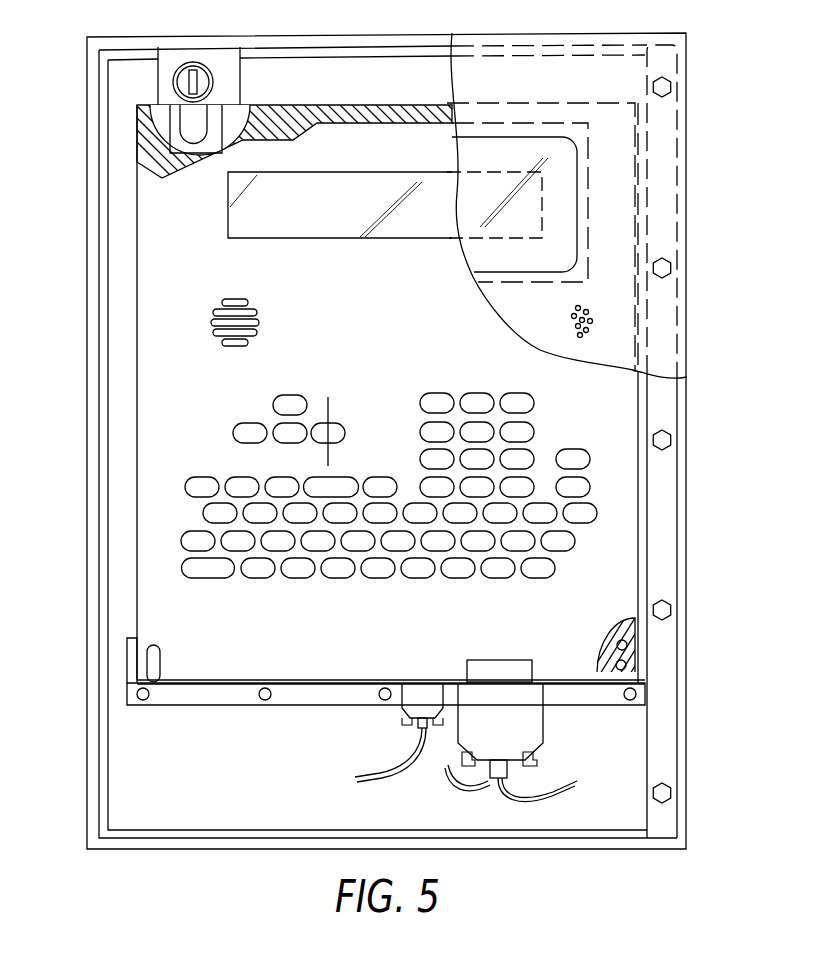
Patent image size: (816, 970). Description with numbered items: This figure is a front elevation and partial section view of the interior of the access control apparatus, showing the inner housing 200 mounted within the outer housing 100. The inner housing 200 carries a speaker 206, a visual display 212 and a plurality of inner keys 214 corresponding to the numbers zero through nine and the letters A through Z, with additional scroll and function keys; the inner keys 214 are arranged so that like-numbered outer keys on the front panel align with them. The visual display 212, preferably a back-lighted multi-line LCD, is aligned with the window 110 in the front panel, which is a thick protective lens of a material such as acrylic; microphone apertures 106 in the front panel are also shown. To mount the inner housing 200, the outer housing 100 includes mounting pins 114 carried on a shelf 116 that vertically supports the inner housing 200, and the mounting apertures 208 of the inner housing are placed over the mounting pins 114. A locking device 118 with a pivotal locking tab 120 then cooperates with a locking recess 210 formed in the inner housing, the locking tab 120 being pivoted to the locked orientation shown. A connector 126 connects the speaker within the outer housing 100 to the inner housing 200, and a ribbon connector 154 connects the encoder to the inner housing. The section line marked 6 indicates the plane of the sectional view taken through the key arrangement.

The outer housing 100 is at (686, 197).
The microphone apertures 106 is at (569, 305).
The window 110 is at (577, 205).
The mounting pins 114 is at (622, 665).
The shelf 116 is at (349, 693).
The locking device 118 is at (167, 70).
The pivotal locking tab 120 is at (188, 128).
The connector 126 is at (538, 726).
The ribbon connector 154 is at (387, 773).
The inner housing 200 is at (202, 391).
The speaker 206 is at (262, 323).
The mounting apertures 208 is at (622, 647).
The locking recess 210 is at (215, 148).
The visual display 212 is at (262, 225).
The inner keys 214 is at (378, 598).
The section line 6- 6 is at (333, 462).